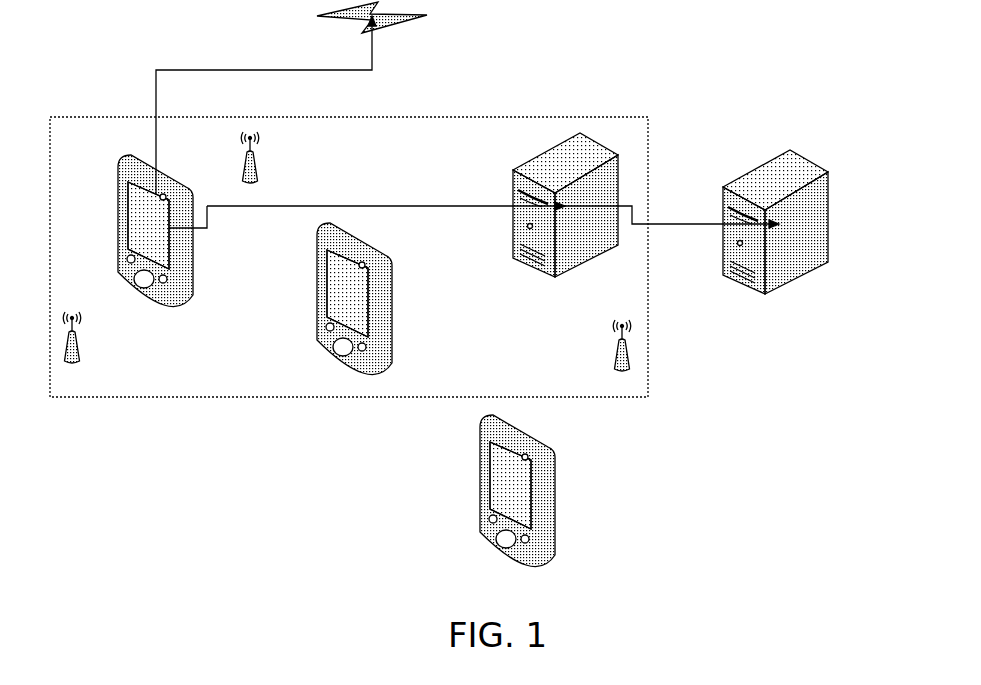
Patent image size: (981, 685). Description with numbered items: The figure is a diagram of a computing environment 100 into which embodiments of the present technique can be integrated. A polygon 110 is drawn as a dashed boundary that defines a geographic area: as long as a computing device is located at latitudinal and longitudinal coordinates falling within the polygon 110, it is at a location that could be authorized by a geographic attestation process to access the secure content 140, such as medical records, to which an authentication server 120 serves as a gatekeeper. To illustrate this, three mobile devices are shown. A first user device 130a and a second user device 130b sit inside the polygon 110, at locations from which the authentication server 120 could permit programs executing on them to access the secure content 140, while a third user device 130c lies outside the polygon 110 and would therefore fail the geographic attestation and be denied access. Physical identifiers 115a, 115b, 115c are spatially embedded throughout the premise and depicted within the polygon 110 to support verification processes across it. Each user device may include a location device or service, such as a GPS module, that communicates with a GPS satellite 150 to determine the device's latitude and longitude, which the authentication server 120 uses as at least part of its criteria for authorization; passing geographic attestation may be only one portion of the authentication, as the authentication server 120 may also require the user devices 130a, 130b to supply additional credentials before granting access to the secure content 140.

The computing environment 100 is at (912, 101).
The polygon 110 is at (129, 144).
The physical identifier 115a is at (73, 348).
The physical identifier 115b is at (250, 170).
The physical identifier 115c is at (623, 357).
The authentication server 120 is at (565, 216).
The first user device 130a is at (155, 241).
The second user device 130b is at (354, 308).
The third user device 130c is at (517, 501).
The secure content 140 is at (775, 235).
The GPS satellite 150 is at (289, 114).